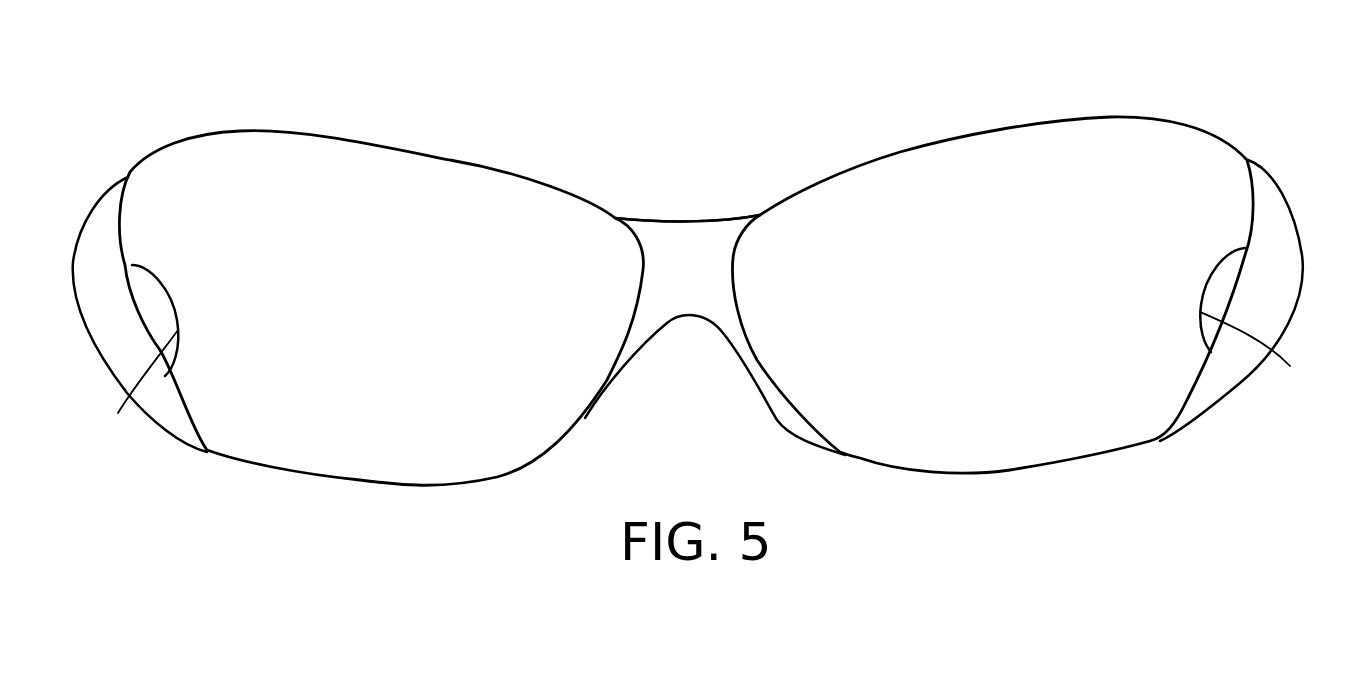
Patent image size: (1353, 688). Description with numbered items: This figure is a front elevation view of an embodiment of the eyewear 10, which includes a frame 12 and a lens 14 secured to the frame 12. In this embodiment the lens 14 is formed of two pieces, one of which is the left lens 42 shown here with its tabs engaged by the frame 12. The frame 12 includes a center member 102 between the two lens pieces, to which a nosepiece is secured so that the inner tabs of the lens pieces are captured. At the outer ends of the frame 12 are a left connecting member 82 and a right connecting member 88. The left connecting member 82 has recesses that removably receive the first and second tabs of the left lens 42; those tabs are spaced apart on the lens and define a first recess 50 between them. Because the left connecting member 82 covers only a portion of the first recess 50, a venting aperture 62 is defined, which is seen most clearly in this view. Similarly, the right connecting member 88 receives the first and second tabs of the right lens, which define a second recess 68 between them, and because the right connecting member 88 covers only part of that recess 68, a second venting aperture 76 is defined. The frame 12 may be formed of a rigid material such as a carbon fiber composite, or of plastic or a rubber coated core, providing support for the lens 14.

The eyewear 10 is at (1000, 118).
The frame 12 is at (632, 220).
The lens 14 is at (325, 495).
The left lens 42 is at (992, 319).
The first recess 50 is at (1264, 350).
The first venting aperture 62 is at (1222, 282).
The second recess 68 is at (138, 390).
The second venting aperture 76 is at (157, 297).
The left connecting member 82 is at (1280, 293).
The right connecting member 88 is at (98, 313).
The center member 102 is at (712, 238).